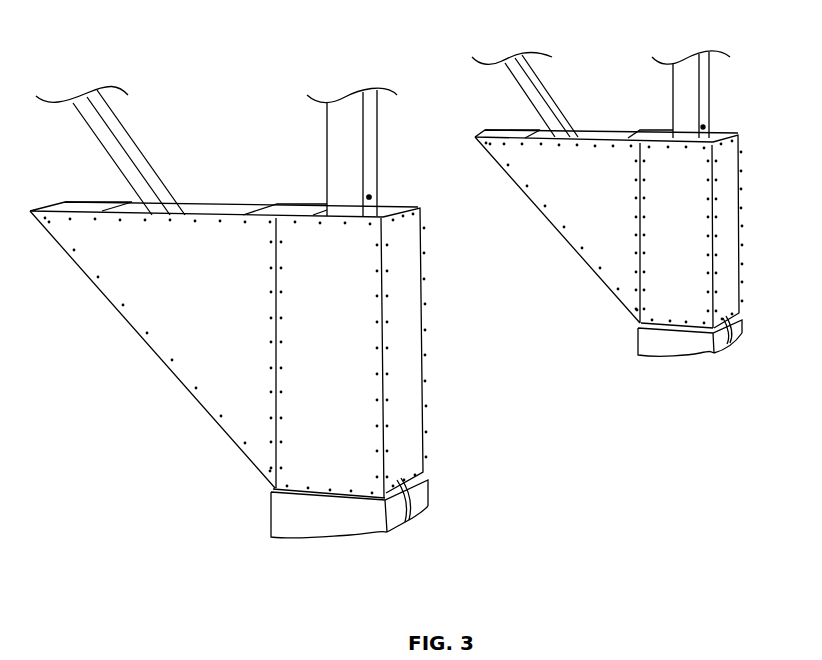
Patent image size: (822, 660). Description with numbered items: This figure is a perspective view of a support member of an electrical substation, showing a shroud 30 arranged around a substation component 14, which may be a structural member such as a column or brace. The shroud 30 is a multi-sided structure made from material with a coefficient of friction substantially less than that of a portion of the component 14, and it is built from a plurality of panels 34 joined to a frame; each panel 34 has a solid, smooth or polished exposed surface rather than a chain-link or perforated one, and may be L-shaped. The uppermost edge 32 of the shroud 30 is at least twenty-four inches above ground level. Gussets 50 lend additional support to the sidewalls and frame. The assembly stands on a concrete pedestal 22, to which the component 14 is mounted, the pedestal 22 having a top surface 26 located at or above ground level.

The substation component 14 is at (133, 137).
The concrete pedestal 22 is at (428, 495).
The top surface 26 is at (425, 472).
The shroud 30 is at (422, 338).
The uppermost edge 32 is at (212, 203).
The panel 34 is at (187, 291).
The gusset 50 is at (87, 202).